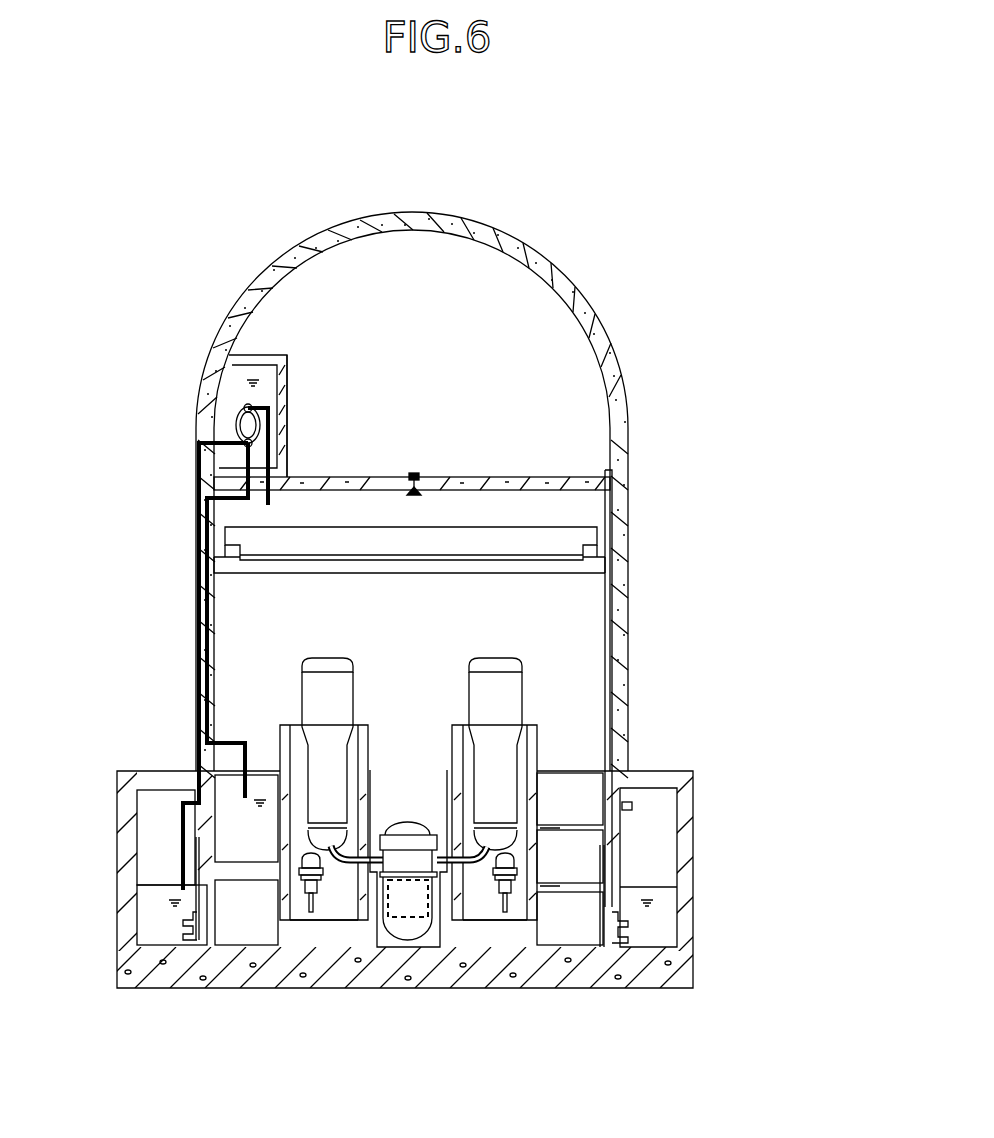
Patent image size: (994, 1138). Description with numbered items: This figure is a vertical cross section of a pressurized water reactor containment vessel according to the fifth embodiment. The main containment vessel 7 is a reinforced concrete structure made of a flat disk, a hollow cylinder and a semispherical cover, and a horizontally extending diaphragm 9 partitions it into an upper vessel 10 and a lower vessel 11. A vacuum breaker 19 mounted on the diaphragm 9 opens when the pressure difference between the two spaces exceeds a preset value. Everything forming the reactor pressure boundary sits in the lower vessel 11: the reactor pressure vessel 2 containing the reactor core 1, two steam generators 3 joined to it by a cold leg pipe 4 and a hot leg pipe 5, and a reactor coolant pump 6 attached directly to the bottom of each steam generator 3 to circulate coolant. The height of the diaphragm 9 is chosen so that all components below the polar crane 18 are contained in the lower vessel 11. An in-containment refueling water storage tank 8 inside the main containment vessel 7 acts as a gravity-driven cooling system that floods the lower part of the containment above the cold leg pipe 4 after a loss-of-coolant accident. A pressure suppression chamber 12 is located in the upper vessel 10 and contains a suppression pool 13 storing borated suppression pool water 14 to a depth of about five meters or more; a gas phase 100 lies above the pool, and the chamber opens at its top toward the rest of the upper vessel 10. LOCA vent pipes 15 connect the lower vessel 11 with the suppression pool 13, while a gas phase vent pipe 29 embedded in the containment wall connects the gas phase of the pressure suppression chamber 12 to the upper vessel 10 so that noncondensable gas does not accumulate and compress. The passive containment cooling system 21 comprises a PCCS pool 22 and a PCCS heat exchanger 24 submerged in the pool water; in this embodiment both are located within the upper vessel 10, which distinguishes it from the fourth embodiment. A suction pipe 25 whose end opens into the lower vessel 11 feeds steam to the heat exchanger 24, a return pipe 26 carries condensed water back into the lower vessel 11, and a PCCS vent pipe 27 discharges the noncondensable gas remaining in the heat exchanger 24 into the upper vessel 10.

The reactor core 1 is at (418, 918).
The reactor pressure vessel 2 is at (397, 940).
The steam generator 3 is at (327, 665).
The cold leg pipe 4 is at (473, 865).
The hot leg pipe 5 is at (353, 840).
The reactor coolant pump 6 is at (310, 907).
The main containment vessel 7 is at (627, 416).
The in-containment refueling water storage tank 8 is at (235, 836).
The diaphragm 9 is at (522, 478).
The upper vessel 10 is at (560, 325).
The lower vessel 11 is at (582, 700).
The pressure suppression chamber 12 is at (150, 802).
The suppression pool 13 is at (145, 906).
The suppression pool water 14 is at (160, 930).
The LOCA vent pipe 15 is at (196, 932).
The polar crane 18 is at (567, 542).
The vacuum breaker 19 is at (414, 473).
The passive containment cooling system 21 is at (240, 394).
The PCCS pool 22 is at (228, 403).
The PCCS heat exchanger 24 is at (238, 425).
The suction pipe 25 is at (290, 427).
The return pipe 26 is at (238, 742).
The PCCS vent pipe 27 is at (197, 693).
The gas phase vent pipe 29 is at (614, 642).
The gas phase 100 is at (666, 812).